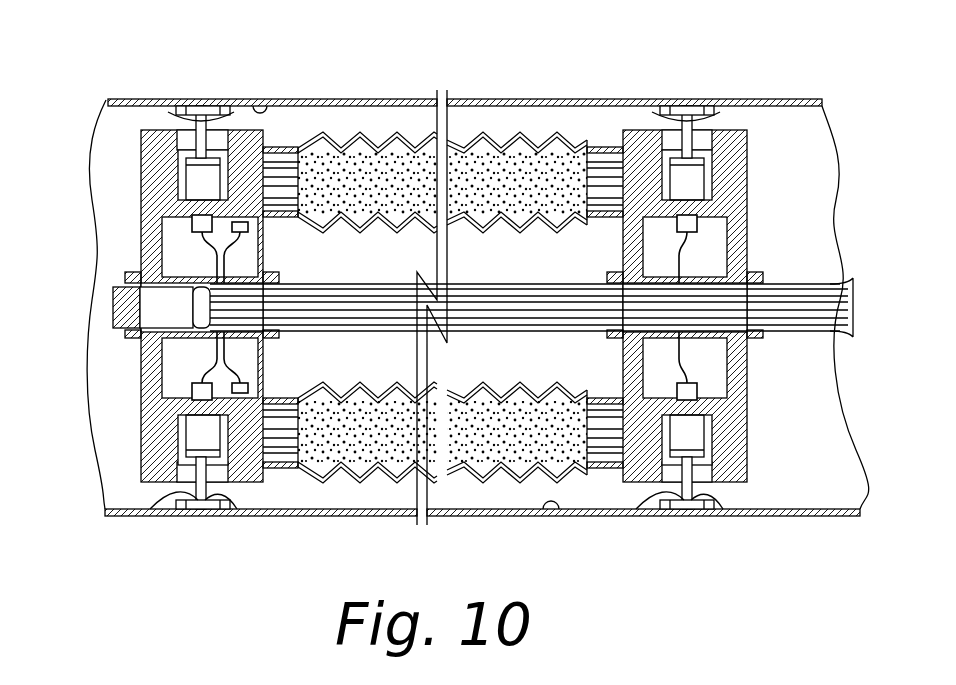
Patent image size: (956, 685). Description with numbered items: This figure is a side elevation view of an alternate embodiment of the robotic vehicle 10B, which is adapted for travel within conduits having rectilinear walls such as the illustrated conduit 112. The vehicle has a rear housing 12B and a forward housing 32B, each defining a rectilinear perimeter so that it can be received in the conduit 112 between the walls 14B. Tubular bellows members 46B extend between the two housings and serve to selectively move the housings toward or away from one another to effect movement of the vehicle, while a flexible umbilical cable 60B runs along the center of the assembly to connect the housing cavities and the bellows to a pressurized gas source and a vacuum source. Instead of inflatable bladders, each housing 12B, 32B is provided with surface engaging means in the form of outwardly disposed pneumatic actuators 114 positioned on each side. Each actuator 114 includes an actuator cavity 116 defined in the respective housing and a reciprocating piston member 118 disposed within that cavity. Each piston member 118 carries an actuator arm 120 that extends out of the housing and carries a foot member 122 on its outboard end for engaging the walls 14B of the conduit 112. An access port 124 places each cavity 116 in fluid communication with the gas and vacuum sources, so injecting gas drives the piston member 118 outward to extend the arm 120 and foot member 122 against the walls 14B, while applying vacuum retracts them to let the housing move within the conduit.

The robotic vehicle 10B is at (553, 128).
The rear housing 12B is at (730, 486).
The walls 14B is at (250, 100).
The forward housing 32B is at (148, 130).
The bellows members 46B is at (358, 175).
The umbilical cable 60B is at (290, 335).
The conduit 112 is at (522, 100).
The pneumatic actuators 114 is at (176, 179).
The actuator cavity 116 is at (178, 188).
The piston member 118 is at (145, 134).
The actuator arm 120 is at (233, 100).
The foot member 122 is at (165, 112).
The access port 124 is at (196, 232).